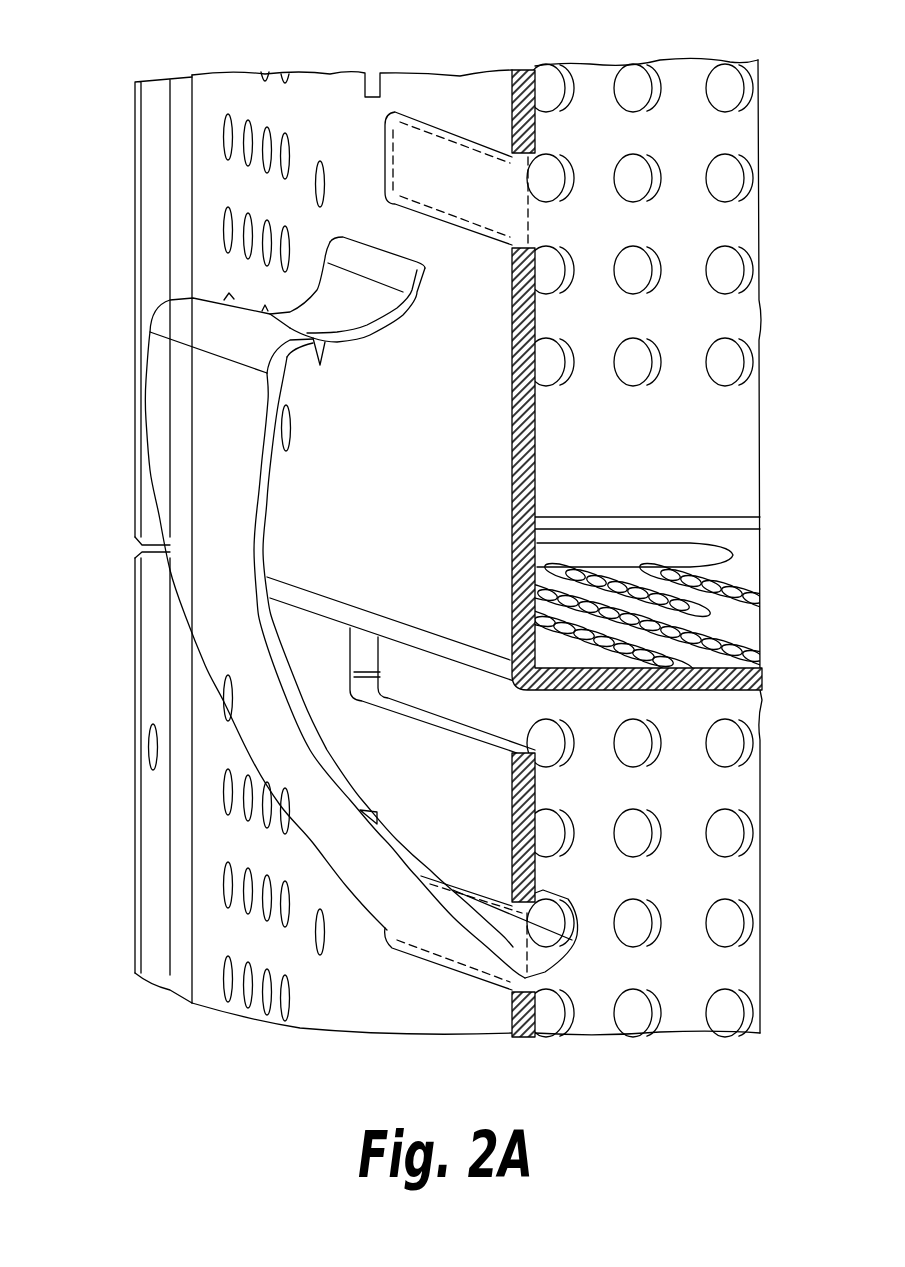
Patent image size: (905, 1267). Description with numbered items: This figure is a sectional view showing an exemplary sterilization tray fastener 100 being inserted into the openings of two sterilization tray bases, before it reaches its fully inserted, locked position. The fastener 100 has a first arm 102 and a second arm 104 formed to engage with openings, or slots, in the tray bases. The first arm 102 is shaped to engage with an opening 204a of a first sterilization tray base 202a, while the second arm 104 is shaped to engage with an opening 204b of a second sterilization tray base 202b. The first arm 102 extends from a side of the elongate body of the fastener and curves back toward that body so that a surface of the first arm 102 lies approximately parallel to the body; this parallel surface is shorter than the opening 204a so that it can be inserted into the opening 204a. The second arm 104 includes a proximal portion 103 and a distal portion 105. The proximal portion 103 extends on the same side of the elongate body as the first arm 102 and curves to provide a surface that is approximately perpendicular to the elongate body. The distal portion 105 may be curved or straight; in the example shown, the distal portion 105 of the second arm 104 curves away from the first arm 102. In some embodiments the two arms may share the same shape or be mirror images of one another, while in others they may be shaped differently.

The sterilization tray fastener 100 is at (363, 612).
The first arm 102 is at (590, 956).
The proximal portion 103 is at (286, 386).
The second arm 104 is at (150, 297).
The distal portion 105 is at (370, 345).
The first sterilization tray base 202a is at (461, 787).
The second sterilization tray base 202b is at (410, 550).
The opening 204a is at (447, 978).
The opening 204b is at (445, 124).